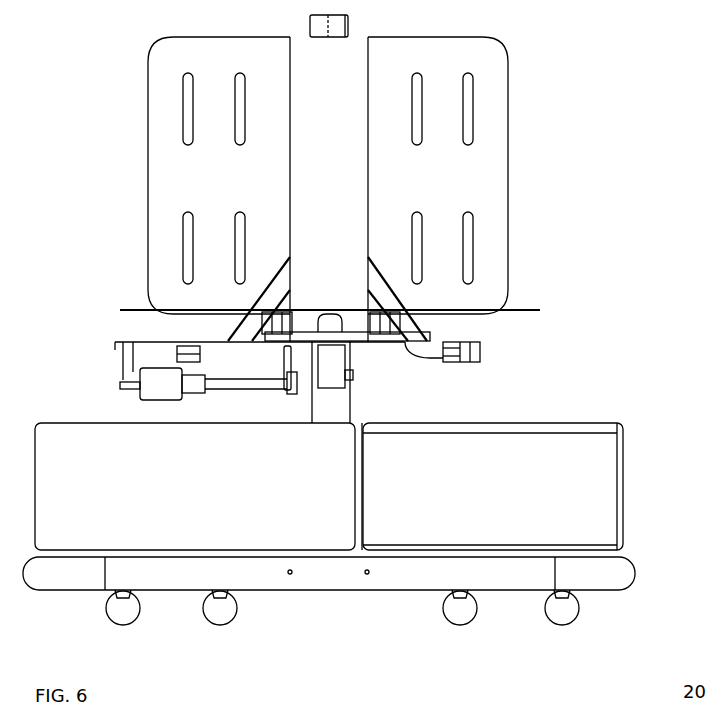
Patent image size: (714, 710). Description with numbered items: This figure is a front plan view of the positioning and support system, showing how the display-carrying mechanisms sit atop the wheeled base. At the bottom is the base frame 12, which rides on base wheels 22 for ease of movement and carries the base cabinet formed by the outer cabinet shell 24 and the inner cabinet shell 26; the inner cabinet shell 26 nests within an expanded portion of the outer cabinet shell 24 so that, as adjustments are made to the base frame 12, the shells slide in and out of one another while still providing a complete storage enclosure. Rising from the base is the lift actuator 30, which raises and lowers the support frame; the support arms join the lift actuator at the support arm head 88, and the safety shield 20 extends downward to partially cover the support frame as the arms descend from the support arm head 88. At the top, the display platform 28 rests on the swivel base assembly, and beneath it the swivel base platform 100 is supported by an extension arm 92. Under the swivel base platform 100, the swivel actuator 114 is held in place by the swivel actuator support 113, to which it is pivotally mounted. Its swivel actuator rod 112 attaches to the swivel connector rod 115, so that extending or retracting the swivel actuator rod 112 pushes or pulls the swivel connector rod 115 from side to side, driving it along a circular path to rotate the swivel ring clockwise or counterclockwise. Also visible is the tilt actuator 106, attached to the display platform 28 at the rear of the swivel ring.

The base frame 12 is at (393, 596).
The safety shield 20 is at (448, 190).
The base wheels 22 is at (220, 608).
The outer cabinet shell 24 is at (501, 502).
The inner cabinet shell 26 is at (201, 502).
The display platform 28 is at (540, 311).
The lift actuator 30 is at (337, 398).
The support arm head 88 is at (348, 18).
The extension arm 92 is at (480, 361).
The swivel base platform 100 is at (155, 364).
The tilt actuator 106 is at (338, 357).
The swivel actuator rod 112 is at (273, 383).
The swivel actuator support 113 is at (130, 363).
The swivel actuator 114 is at (150, 342).
The swivel connector rod 115 is at (287, 366).